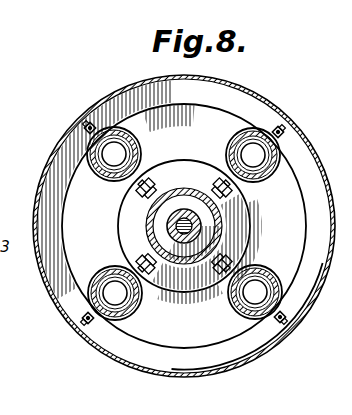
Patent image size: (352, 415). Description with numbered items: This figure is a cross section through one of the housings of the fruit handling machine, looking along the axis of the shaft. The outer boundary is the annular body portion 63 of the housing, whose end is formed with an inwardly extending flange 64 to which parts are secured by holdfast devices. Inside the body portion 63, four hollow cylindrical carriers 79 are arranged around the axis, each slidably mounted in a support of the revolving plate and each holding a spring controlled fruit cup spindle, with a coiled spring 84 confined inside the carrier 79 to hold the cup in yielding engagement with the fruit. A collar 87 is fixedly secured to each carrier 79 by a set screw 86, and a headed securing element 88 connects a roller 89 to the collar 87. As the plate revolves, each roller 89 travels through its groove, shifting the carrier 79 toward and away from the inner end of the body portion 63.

The annular body portion 63 is at (72, 134).
The inwardly extending flange 64 is at (54, 238).
The hollow cylindrical carrier 79 is at (128, 152).
The coiled spring 84 is at (116, 162).
The set screw 86 is at (89, 125).
The collar 87 is at (140, 152).
The headed securing element 88 is at (244, 221).
The roller 89 is at (214, 176).